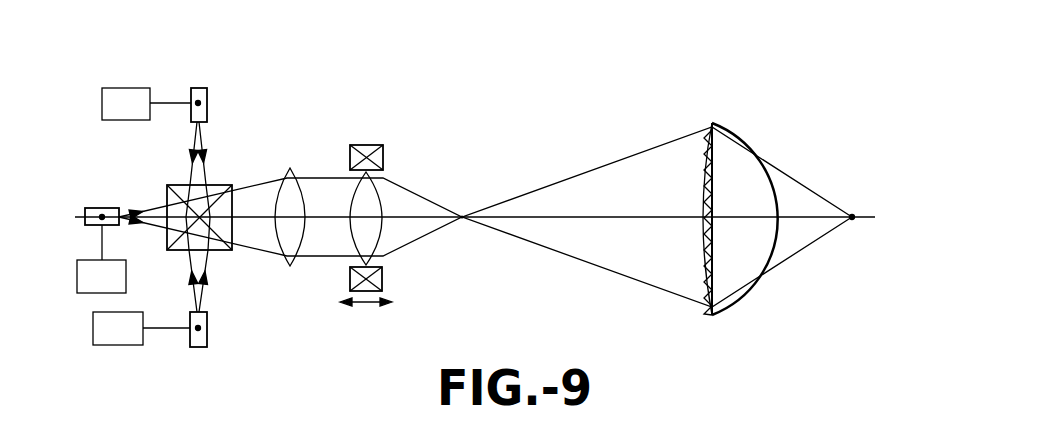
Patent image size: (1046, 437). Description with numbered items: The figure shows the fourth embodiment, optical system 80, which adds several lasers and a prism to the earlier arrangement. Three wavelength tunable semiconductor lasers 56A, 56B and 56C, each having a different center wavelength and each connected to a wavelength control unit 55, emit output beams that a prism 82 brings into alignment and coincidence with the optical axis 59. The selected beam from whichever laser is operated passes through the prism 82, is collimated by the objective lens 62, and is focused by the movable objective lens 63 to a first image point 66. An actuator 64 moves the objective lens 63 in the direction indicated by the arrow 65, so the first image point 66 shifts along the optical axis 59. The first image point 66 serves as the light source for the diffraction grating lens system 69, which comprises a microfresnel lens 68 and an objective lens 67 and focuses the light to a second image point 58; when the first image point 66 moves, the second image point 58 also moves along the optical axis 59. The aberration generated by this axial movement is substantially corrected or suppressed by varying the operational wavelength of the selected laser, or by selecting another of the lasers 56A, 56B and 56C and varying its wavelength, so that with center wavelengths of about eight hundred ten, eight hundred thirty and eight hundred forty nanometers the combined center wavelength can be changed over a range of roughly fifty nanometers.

The wavelength control unit 55 is at (134, 218).
The wavelength tunable semiconductor laser 56A is at (103, 208).
The wavelength tunable semiconductor laser 56B is at (200, 87).
The wavelength tunable semiconductor laser 56C is at (198, 348).
The prism 82 is at (220, 185).
The objective lens 62 is at (287, 168).
The movable objective lens 63 is at (378, 186).
The actuator 64 is at (350, 282).
The arrow 65 is at (367, 307).
The first image point 66 is at (463, 215).
The optical axis 59 is at (537, 244).
The objective lens 67 is at (716, 123).
The microfresnel lens 68 is at (711, 127).
The diffraction grating lens system 69 is at (765, 120).
The optical system 80 is at (631, 71).
The second image point 58 is at (852, 215).